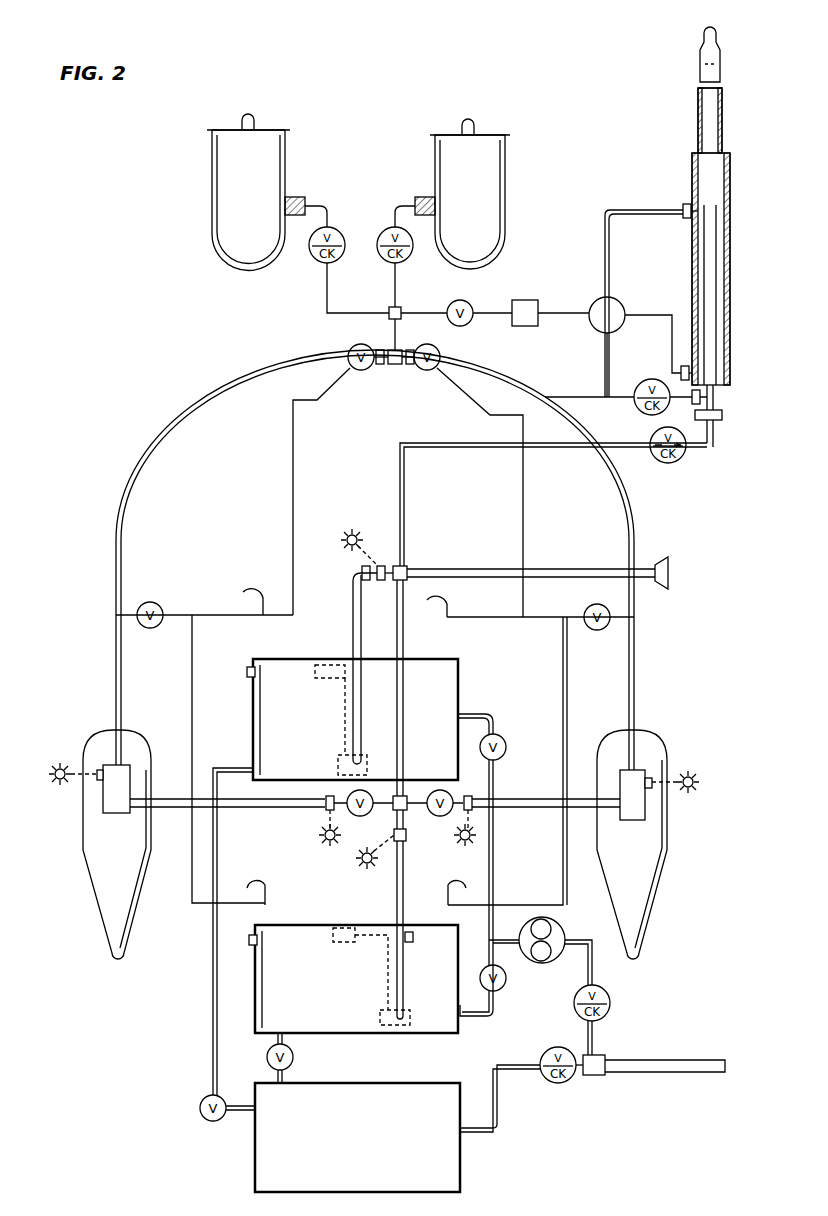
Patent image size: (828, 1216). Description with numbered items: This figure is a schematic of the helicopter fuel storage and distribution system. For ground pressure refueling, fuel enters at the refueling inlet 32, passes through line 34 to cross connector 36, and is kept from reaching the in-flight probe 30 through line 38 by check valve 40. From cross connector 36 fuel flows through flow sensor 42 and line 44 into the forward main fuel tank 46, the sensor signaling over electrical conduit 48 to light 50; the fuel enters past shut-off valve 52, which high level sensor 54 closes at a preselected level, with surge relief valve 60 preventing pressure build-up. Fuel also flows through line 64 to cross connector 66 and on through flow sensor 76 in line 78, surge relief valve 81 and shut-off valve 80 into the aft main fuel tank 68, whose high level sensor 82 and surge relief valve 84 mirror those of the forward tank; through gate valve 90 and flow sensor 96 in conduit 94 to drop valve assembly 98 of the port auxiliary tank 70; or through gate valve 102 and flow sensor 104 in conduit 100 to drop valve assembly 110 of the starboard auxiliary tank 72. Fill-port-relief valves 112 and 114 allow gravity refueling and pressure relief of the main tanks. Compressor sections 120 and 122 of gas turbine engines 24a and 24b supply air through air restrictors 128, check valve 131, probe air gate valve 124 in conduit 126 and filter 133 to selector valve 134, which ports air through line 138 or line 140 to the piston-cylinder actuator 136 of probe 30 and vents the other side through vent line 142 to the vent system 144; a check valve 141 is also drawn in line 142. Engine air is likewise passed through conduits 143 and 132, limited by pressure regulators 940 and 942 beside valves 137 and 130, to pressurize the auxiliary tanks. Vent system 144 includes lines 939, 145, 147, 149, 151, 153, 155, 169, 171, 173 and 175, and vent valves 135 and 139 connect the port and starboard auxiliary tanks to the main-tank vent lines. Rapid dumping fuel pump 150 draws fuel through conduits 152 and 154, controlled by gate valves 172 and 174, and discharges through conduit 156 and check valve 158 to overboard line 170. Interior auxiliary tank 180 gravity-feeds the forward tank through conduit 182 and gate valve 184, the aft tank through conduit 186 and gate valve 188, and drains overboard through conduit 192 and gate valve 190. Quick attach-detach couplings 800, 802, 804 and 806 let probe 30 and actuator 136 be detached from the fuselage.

The port gas turbine engine 24a is at (212, 153).
The gas turbine engine 24b is at (505, 155).
The in-flight refueling probe 30 is at (692, 86).
The ground pressure refueling inlet 32 is at (662, 558).
The line 34 is at (577, 566).
The cross connector 36 is at (408, 568).
The line 38 is at (466, 432).
The check valve 40 is at (680, 460).
The flow sensor 42 is at (370, 582).
The line 44 is at (352, 602).
The forward main fuel tank 46 is at (252, 722).
The conduit 48 is at (385, 566).
The electric light 50 is at (355, 533).
The shut-off valve 52 is at (337, 768).
The high level sensor 54 is at (335, 660).
The surge relief valve 60 is at (344, 712).
The line 64 is at (408, 633).
The cross connector 66 is at (406, 812).
The aft main fuel tank 68 is at (255, 992).
The port auxiliary fuel tank 70 is at (128, 857).
The starboard auxiliary fuel tank 72 is at (642, 862).
The flow sensor 76 is at (406, 842).
The line 78 is at (396, 900).
The shut-off valve 80 is at (410, 1018).
The surge relief valve 81 is at (413, 937).
The high level sensor 82 is at (332, 941).
The surge relief valve 84 is at (386, 968).
The pilot actuated motor operated gate valve 90 is at (358, 816).
The conduit 94 is at (170, 798).
The flow sensor 96 is at (326, 812).
The drop valve assembly 98 is at (103, 798).
The conduit 100 is at (546, 810).
The pilot operated gate valve 102 is at (447, 790).
The flow sensor 104 is at (470, 796).
The drop valve assembly 110 is at (645, 805).
The fill-port-relief valve 112 is at (250, 666).
The fill-port-relief valve 114 is at (250, 942).
The compressor section 120 is at (264, 199).
The compressor section 122 is at (487, 203).
The probe air gate valve 124 is at (468, 306).
The conduit 126 is at (405, 310).
The air restrictor 128 is at (295, 197).
The valve 130 is at (440, 355).
The check valve 131 is at (340, 235).
The conduit 132 is at (632, 512).
The filter 133 is at (524, 300).
The pilot operated selector valve 134 is at (620, 303).
The vent valve 135 is at (148, 602).
The piston-cylinder actuator 136 is at (731, 267).
The valve 137 is at (352, 349).
The line 138 is at (684, 204).
The vent valve 139 is at (600, 612).
The line 140 is at (680, 373).
The check valve 141 is at (654, 380).
The vent line 142 is at (600, 396).
The conduit 143 is at (118, 510).
The fuel vent system 144 is at (284, 471).
The vent line 145 is at (524, 493).
The vent line 147 is at (560, 622).
The vent line 149 is at (568, 684).
The rapid dumping fuel pump 150 is at (562, 924).
The vent line 151 is at (291, 496).
The conduit 152 is at (500, 762).
The vent line 153 is at (216, 612).
The conduit 154 is at (488, 960).
The vent line 155 is at (190, 688).
The conduit 156 is at (592, 978).
The check valve 158 is at (612, 1003).
The vent line 169 is at (268, 891).
The overboard line 170 is at (685, 1058).
The vent line 171 is at (252, 580).
The pilot operated gate valve 172 is at (504, 740).
The vent line 173 is at (446, 891).
The pilot operated gate valve 174 is at (507, 978).
The vent line 175 is at (440, 598).
The interior auxiliary tank 180 is at (367, 1150).
The conduit 182 is at (212, 940).
The pilot operated gate valve 184 is at (200, 1108).
The conduit 186 is at (276, 1076).
The pilot operated gate valve 188 is at (300, 1058).
The pilot operated gate valve 190 is at (545, 1052).
The conduit 192 is at (488, 1078).
The quick attach-detach coupling 800 is at (686, 220).
The quick attach-detach coupling 802 is at (692, 372).
The quick attach-detach coupling 804 is at (722, 396).
The quick attach-detach coupling 806 is at (715, 425).
The vent line 939 is at (722, 416).
The pressure regulator 940 is at (380, 350).
The pressure regulator 942 is at (410, 350).